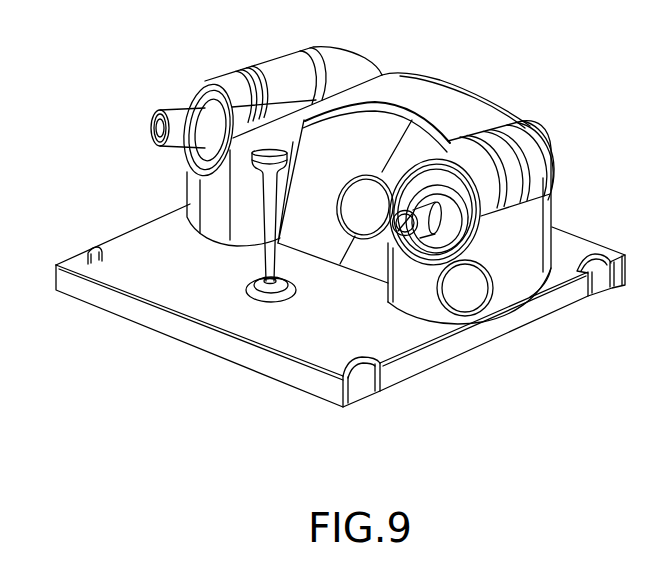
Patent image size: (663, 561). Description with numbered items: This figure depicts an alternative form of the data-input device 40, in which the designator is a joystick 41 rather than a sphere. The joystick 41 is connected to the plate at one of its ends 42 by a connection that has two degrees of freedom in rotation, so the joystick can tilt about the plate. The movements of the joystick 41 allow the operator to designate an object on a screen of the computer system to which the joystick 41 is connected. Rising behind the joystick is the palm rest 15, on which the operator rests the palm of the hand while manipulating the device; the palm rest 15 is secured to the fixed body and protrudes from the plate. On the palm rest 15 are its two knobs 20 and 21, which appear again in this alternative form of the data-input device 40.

The palm rest 15 is at (427, 97).
The knob 20 is at (180, 117).
The knob 21 is at (430, 218).
The data-input device 40 is at (121, 352).
The joystick 41 is at (265, 249).
The end 42 is at (290, 287).